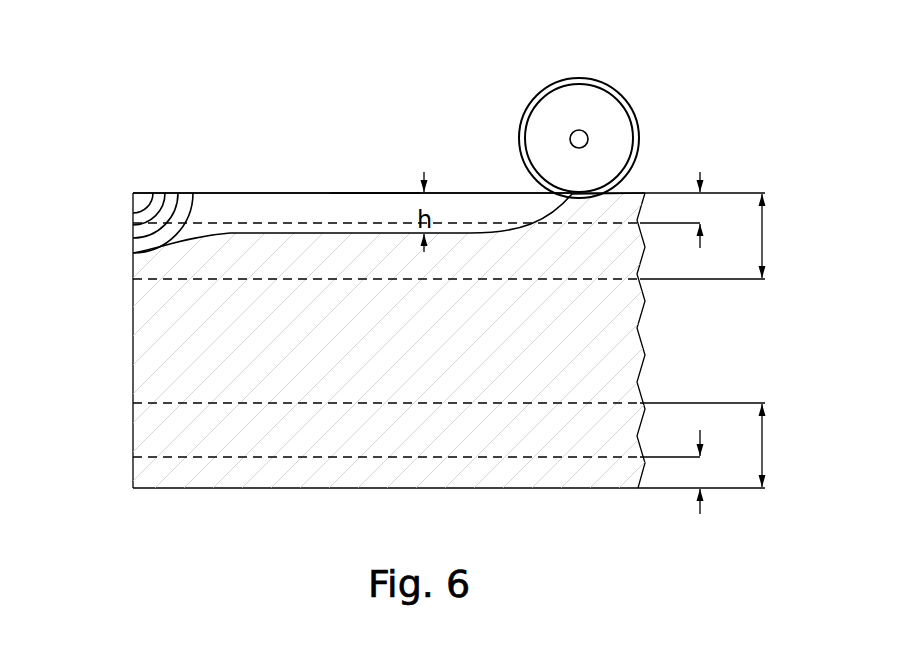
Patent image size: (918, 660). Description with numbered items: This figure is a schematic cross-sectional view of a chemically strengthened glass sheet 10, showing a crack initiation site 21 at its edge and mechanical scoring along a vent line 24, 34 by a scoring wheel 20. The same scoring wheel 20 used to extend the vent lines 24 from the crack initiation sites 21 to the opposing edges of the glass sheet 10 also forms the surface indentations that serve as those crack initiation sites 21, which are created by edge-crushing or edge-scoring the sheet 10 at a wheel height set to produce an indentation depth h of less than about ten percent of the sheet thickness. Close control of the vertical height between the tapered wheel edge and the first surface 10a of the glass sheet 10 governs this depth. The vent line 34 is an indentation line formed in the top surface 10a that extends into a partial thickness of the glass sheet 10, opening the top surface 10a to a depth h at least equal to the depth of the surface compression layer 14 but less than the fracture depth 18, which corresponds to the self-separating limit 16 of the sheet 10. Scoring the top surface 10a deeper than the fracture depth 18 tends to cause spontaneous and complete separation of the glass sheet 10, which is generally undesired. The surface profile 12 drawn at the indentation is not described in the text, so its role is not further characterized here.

The glass sheet 10 is at (703, 147).
The first surface 10a is at (637, 193).
The surface profile / indentation 12 is at (247, 233).
The surface compression layer 14 is at (578, 226).
The self-separating limit 16 is at (580, 281).
The fracture depth 18 is at (727, 343).
The scoring wheel 20 is at (583, 78).
The crack initiation site 21 is at (130, 212).
The vent line 24 is at (294, 191).
The vent line 34 is at (345, 193).